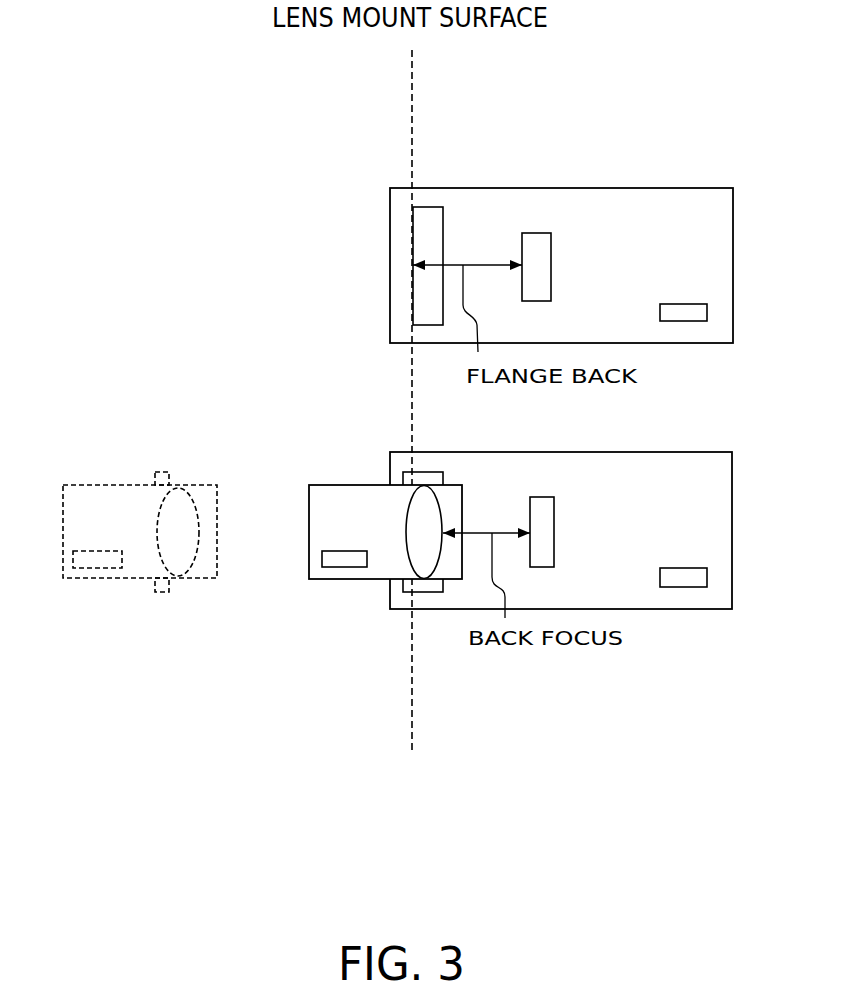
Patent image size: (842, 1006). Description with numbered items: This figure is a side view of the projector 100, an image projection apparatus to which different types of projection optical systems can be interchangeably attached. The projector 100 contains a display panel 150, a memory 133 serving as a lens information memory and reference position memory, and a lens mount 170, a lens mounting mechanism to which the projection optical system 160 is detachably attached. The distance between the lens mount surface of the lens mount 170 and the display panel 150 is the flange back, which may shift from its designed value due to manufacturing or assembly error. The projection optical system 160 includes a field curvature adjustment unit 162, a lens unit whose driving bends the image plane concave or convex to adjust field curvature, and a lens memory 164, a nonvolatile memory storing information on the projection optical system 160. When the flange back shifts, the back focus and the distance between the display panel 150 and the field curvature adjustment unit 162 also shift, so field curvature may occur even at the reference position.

The projector 100 is at (510, 188).
The lens mount 170 is at (416, 207).
The display panel 150 is at (551, 250).
The memory 133 is at (679, 304).
The projection optical system 160 is at (343, 484).
The field curvature adjustment unit 162 is at (424, 568).
The lens memory 164 is at (348, 568).